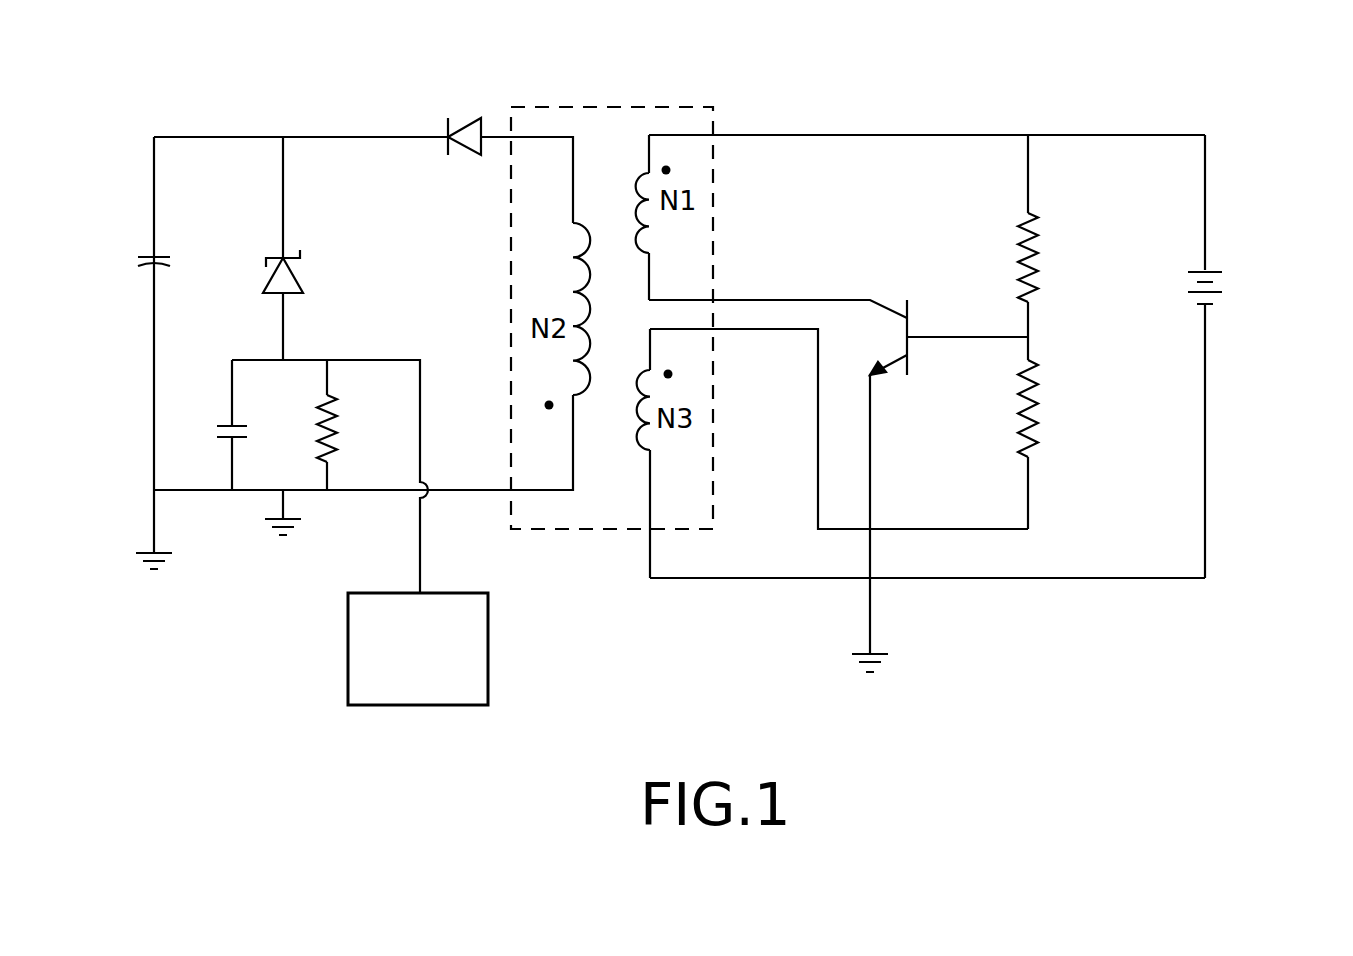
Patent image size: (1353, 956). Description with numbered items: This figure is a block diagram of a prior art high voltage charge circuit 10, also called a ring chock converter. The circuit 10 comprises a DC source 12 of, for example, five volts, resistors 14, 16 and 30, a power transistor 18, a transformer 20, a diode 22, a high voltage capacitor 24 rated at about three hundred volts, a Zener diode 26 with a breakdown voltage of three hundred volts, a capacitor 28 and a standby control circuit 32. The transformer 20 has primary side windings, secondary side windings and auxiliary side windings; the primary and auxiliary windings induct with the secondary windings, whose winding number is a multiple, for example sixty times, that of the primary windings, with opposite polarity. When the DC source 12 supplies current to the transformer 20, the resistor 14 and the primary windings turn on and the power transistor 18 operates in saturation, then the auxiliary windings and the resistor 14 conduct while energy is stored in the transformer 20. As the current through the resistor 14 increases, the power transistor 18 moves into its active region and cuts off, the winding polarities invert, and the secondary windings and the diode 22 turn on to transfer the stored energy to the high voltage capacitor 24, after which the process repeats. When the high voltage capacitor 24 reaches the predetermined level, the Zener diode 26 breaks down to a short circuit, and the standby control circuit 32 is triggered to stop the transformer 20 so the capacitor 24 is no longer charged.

The high voltage charge circuit 10 is at (1298, 79).
The DC source 12 is at (1225, 291).
The resistor 14 is at (1012, 268).
The resistor 16 is at (1012, 408).
The power transistor 18 is at (903, 300).
The transformer 20 is at (590, 532).
The diode 22 is at (473, 118).
The high voltage capacitor 24 is at (140, 250).
The Zener diode 26 is at (312, 279).
The capacitor 28 is at (222, 418).
The resistor 30 is at (345, 412).
The standby control circuit 32 is at (405, 706).